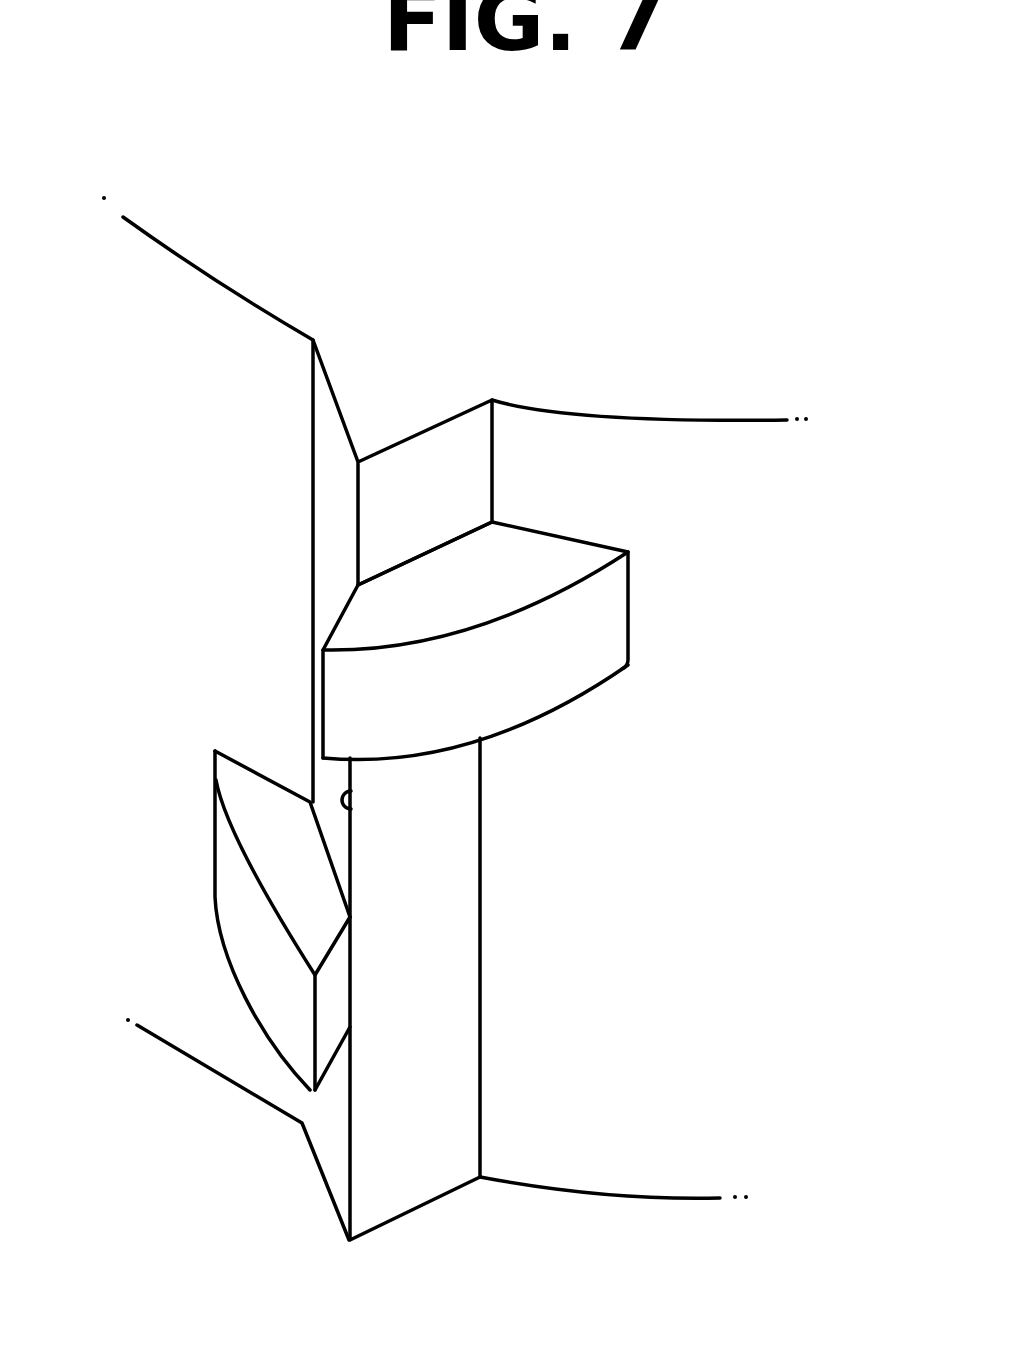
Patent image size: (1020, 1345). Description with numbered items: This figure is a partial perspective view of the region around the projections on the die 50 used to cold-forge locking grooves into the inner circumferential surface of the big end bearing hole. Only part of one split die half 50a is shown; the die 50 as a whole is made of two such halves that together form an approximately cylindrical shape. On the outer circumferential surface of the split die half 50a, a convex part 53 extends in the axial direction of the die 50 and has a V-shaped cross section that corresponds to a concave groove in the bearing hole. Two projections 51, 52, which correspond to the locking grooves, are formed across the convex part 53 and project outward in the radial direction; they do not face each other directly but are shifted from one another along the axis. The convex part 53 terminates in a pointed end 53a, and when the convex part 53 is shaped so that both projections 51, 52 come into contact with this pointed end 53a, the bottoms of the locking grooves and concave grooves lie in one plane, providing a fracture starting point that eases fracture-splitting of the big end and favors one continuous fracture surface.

The die 50 is at (193, 1073).
The split die half 50a is at (628, 1152).
The projection 51 is at (555, 667).
The projection 52 is at (257, 952).
The convex part 53 is at (388, 1188).
The pointed end 53a is at (351, 809).